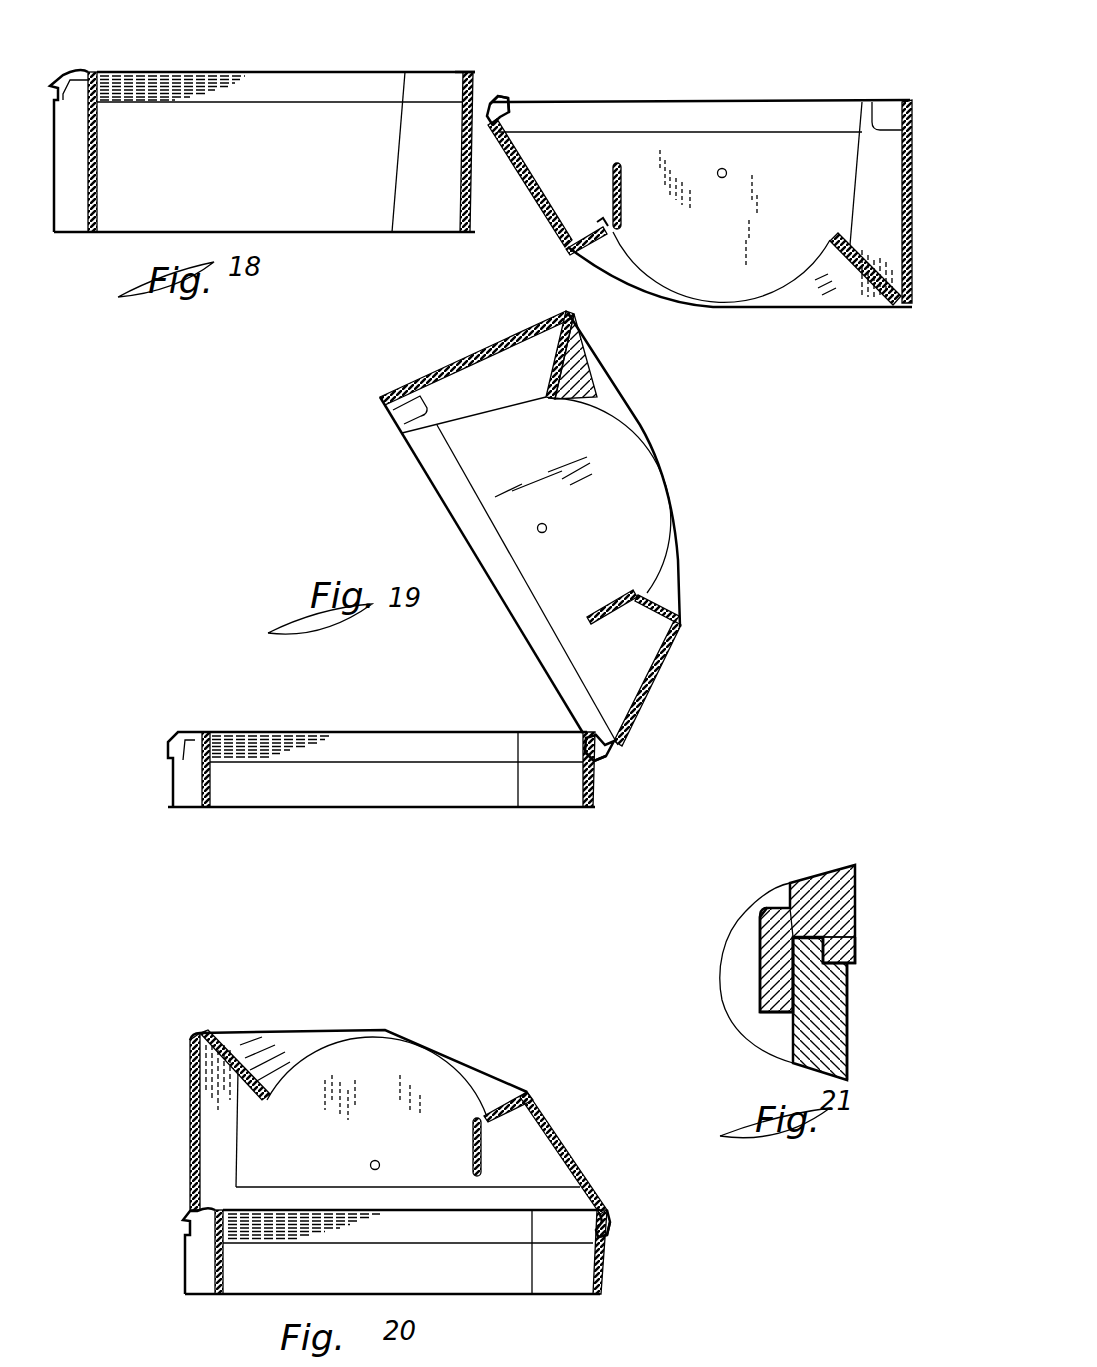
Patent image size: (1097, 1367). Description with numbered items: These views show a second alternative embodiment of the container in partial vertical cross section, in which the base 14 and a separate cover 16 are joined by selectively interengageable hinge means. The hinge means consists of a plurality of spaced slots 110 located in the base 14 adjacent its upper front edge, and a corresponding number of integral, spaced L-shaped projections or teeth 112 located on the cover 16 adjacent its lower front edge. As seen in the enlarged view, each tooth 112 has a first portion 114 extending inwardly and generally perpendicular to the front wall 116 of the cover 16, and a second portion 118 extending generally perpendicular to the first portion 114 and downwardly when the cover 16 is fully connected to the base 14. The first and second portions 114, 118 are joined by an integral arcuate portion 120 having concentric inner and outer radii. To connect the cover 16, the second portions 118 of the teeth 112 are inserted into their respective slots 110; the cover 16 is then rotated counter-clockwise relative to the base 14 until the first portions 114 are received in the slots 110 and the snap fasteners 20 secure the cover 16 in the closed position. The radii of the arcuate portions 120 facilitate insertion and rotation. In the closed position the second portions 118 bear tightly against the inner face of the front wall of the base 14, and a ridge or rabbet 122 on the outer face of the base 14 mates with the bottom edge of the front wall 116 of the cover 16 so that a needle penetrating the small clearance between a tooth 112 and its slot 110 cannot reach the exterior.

In FIG. 18, the base 14 is at (147, 66).
In FIG. 19, the base 14 is at (311, 724).
In FIG. 20, the base 14 is at (612, 1283).
In FIG. 21, the base 14 is at (852, 1055).
In FIG. 18, the cover 16 is at (723, 88).
In FIG. 19, the cover 16 is at (690, 477).
In FIG. 20, the cover 16 is at (534, 1090).
In FIG. 21, the cover 16 is at (862, 878).
In FIG. 18, the snap fasteners 20 is at (51, 68).
In FIG. 19, the snap fasteners 20 is at (171, 731).
In FIG. 20, the snap fasteners 20 is at (165, 1229).
In FIG. 18, the slots 110 is at (465, 88).
In FIG. 21, the slots 110 is at (824, 929).
In FIG. 18, the L-shaped projections or teeth 112 is at (521, 97).
In FIG. 19, the L-shaped projections or teeth 112 is at (571, 741).
In FIG. 20, the L-shaped projections or teeth 112 is at (574, 1241).
In FIG. 21, the L-shaped projections or teeth 112 is at (750, 942).
In FIG. 21, the first portion 114 is at (800, 916).
In FIG. 18, the front wall 116 is at (463, 160).
In FIG. 19, the front wall 116 is at (582, 782).
In FIG. 20, the front wall 116 is at (608, 1247).
In FIG. 21, the front wall 116 is at (808, 1033).
In FIG. 18, the second portion 118 is at (511, 94).
In FIG. 19, the second portion 118 is at (577, 758).
In FIG. 20, the second portion 118 is at (592, 1248).
In FIG. 21, the second portion 118 is at (773, 983).
In FIG. 21, the arcuate portion 120 is at (759, 916).
In FIG. 21, the ridge or rabbet 122 is at (856, 951).